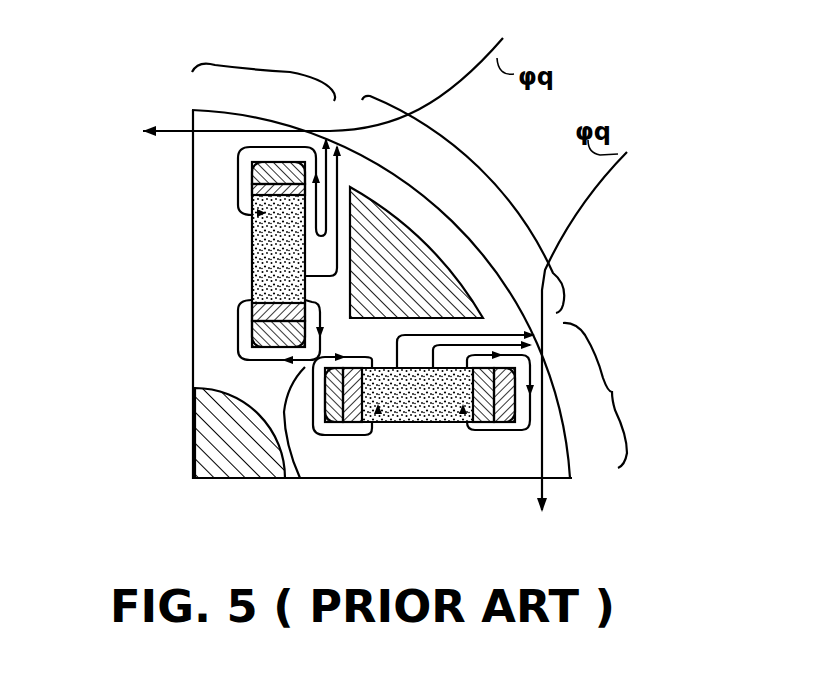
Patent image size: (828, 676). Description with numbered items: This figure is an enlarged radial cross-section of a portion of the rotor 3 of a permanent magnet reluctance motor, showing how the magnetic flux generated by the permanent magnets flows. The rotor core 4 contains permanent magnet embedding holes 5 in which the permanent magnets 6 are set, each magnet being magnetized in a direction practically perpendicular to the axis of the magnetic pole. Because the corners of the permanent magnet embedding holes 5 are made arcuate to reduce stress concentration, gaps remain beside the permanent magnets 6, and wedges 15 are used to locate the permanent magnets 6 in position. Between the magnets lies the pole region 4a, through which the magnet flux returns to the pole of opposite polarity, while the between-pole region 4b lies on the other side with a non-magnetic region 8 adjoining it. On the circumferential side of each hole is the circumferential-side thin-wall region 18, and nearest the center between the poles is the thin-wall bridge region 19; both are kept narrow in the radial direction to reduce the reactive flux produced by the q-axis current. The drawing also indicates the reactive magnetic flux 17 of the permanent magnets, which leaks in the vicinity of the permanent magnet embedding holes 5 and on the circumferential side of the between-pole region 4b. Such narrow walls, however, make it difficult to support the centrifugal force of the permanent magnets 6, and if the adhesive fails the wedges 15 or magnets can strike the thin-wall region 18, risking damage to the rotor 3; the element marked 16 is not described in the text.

The rotor 3 is at (567, 457).
The rotor core 4 is at (320, 463).
The pole region 4a is at (420, 253).
The between-pole region 4b is at (482, 170).
The permanent magnet embedding hole 5 is at (540, 362).
The permanent magnet 6 is at (262, 218).
The non-magnetic region 8 is at (414, 256).
The wedge 15 is at (262, 171).
The magnet insertion hole 16 is at (487, 333).
The reactive magnetic flux of the permanent magnets 17 is at (373, 433).
The circumferential-side thin-wall region 18 is at (272, 140).
The thin-wall bridge region 19 is at (297, 480).